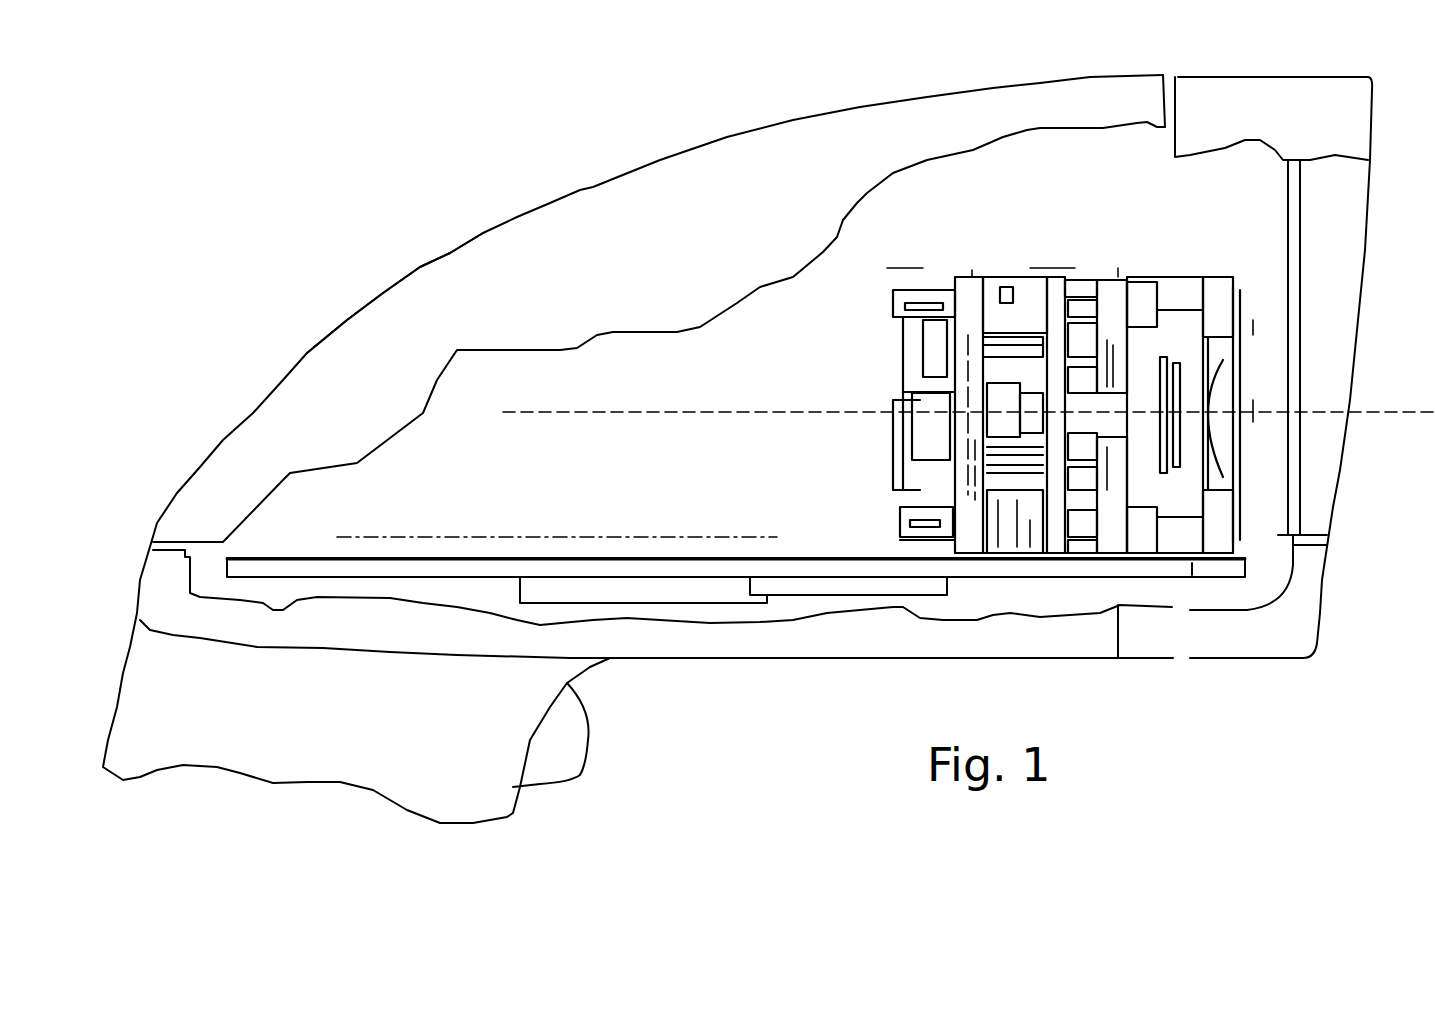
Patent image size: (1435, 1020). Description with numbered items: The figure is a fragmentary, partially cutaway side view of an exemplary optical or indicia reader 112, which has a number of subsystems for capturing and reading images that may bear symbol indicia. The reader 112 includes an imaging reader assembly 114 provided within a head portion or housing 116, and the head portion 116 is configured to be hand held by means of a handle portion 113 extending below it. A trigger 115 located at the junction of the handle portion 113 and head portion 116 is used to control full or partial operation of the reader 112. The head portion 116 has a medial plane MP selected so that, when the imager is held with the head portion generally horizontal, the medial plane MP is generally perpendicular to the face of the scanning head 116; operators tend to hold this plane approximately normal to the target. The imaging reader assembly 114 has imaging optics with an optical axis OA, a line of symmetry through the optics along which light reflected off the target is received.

The optical or indicia reader 112 is at (565, 141).
The handle portion 113 is at (323, 733).
The imaging reader assembly 114 is at (958, 220).
The trigger 115 is at (590, 747).
The head portion 116 is at (385, 292).
The medial plane MP is at (527, 538).
The optical axis OA is at (1373, 405).